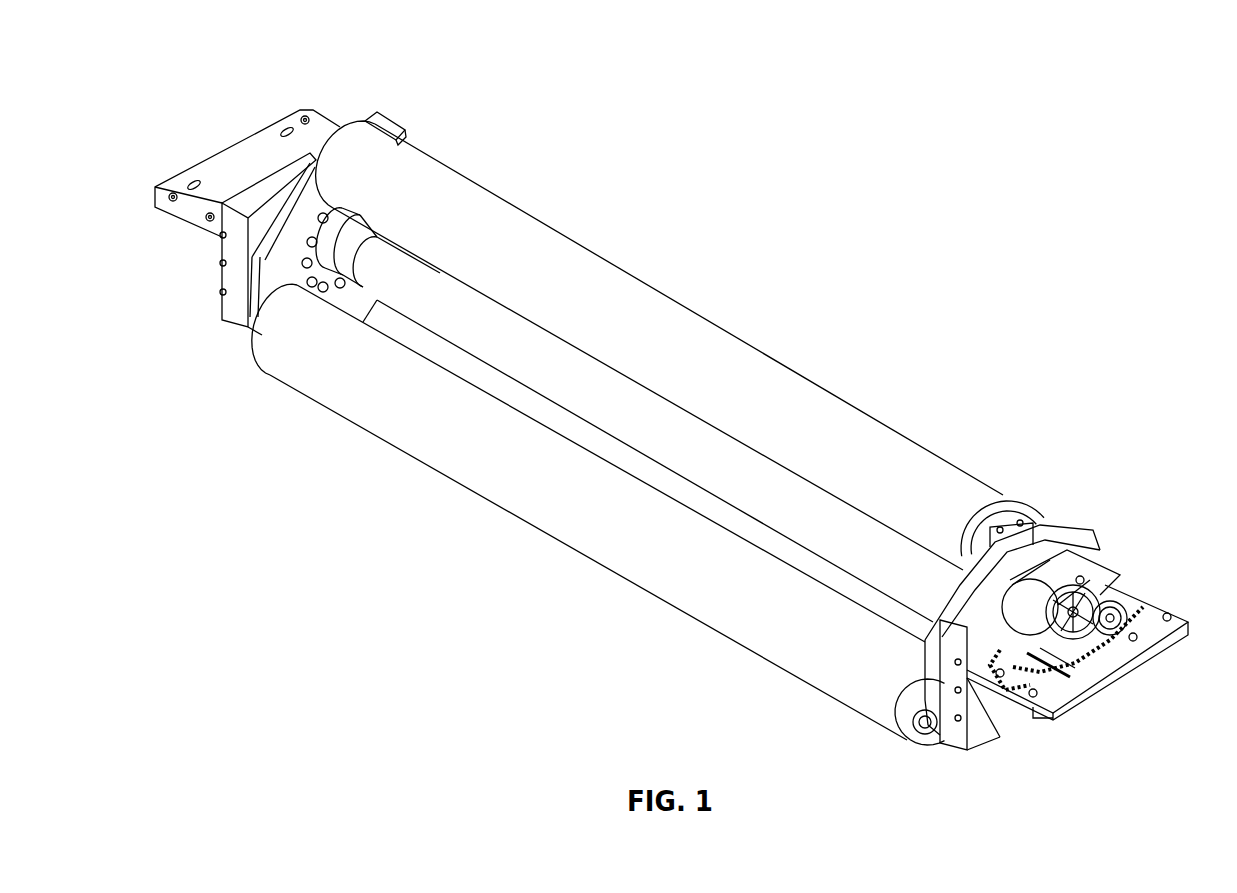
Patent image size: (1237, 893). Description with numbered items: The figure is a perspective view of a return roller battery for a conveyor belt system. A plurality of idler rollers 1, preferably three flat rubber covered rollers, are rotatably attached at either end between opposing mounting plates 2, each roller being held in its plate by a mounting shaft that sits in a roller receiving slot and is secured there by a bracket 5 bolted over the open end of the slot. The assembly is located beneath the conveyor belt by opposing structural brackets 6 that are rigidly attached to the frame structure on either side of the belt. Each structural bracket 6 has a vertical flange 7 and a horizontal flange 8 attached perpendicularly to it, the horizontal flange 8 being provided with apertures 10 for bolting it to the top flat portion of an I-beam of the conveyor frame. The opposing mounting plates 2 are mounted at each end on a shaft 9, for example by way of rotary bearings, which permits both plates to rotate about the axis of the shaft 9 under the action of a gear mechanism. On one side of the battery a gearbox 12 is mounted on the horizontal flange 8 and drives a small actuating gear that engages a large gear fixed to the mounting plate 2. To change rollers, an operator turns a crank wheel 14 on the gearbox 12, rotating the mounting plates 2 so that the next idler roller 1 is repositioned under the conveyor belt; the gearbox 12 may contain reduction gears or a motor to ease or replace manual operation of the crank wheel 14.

The idler roller 1 is at (612, 280).
The mounting plate 2 is at (275, 265).
The bracket 5 is at (1028, 520).
The structural bracket 6 is at (211, 224).
The vertical flange 7 is at (980, 718).
The horizontal flange 8 is at (313, 133).
The shaft 9 is at (552, 382).
The aperture 10 is at (285, 130).
The gearbox 12 is at (1108, 545).
The crank wheel 14 is at (1050, 643).